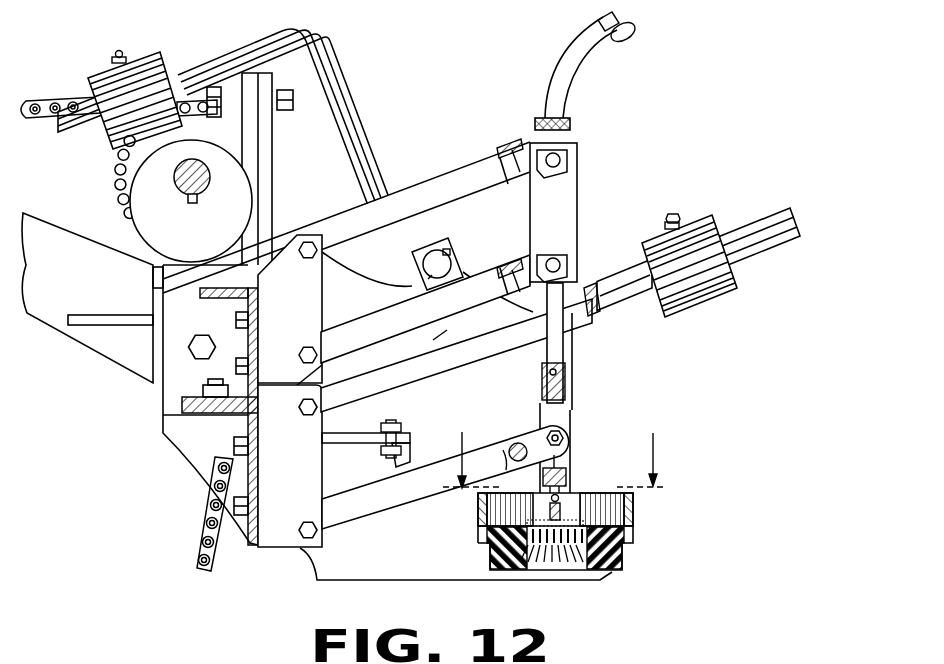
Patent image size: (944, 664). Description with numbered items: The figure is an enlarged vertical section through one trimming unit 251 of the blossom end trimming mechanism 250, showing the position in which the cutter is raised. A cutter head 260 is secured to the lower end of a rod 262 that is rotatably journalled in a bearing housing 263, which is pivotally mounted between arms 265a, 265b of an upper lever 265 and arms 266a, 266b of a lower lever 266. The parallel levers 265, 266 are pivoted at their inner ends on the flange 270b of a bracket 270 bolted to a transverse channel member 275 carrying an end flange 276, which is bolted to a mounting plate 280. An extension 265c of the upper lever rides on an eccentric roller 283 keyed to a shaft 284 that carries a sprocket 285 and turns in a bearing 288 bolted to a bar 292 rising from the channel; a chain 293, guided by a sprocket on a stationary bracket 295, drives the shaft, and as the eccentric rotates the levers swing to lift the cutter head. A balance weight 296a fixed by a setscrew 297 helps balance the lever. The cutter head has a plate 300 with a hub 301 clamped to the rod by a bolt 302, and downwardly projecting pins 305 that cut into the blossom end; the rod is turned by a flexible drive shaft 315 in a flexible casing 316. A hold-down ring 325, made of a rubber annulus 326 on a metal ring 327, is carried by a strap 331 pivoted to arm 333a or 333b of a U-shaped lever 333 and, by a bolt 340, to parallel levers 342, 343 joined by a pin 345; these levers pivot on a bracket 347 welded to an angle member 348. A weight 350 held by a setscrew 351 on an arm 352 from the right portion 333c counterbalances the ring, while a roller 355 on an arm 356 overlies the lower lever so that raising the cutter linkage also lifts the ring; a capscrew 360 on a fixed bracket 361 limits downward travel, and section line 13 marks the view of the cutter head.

The section line 13- 13 is at (553, 460).
The blossom end trimming mechanism 250 is at (350, 64).
The trimming unit 251 is at (586, 182).
The cutter head 260 is at (630, 502).
The rod 262 is at (563, 350).
The bearing housing 263 is at (578, 200).
The lever 265 is at (410, 187).
The arm of lever 265 265a is at (516, 150).
The arm of lever 265 265b is at (577, 144).
The extension of lever 265 265c is at (162, 281).
The lever 266 is at (365, 315).
The arm of lever 266 266a is at (495, 264).
The arm of lever 266 266b is at (561, 251).
The bracket 270 is at (311, 327).
The flange of bracket 270 270b is at (301, 234).
The channel member 275 is at (228, 298).
The flange 276 is at (213, 381).
The mounting plate 280 is at (441, 408).
The eccentric roller 283 is at (142, 218).
The shaft 284 is at (176, 183).
The sprocket 285 is at (115, 181).
The bearing 288 is at (232, 146).
The bar 292 is at (267, 140).
The chain 293 is at (48, 103).
The stationary bracket 295 is at (236, 50).
The balance weight 296a is at (108, 137).
The setscrew 297 is at (112, 57).
The plate 300 is at (545, 512).
The hub 301 is at (562, 470).
The bolt 302 is at (551, 497).
The pins 305 is at (572, 560).
The flexible drive shaft 315 is at (625, 20).
The flexible casing 316 is at (620, 36).
The tomato hold-down ring 325 is at (638, 533).
The rubber annulus 326 is at (604, 570).
The metal ring 327 is at (630, 513).
The strap 331 is at (540, 409).
The U-shaped lever 333 is at (447, 378).
The arm of lever 333 333a is at (482, 356).
The arm of lever 333 333b is at (580, 318).
The right portion of lever 333 333c is at (588, 302).
The bolt 340 is at (567, 436).
The lever 342 is at (563, 430).
The lever 343 is at (491, 455).
The pin 345 is at (509, 461).
The bracket 347 is at (308, 455).
The transverse angle member 348 is at (252, 480).
The weight 350 is at (680, 310).
The setscrew 351 is at (666, 219).
The arm 352 is at (619, 290).
The roller 355 is at (440, 242).
The arm 356 is at (447, 248).
The capscrew 360 is at (386, 423).
The fixed bracket 361 is at (357, 446).